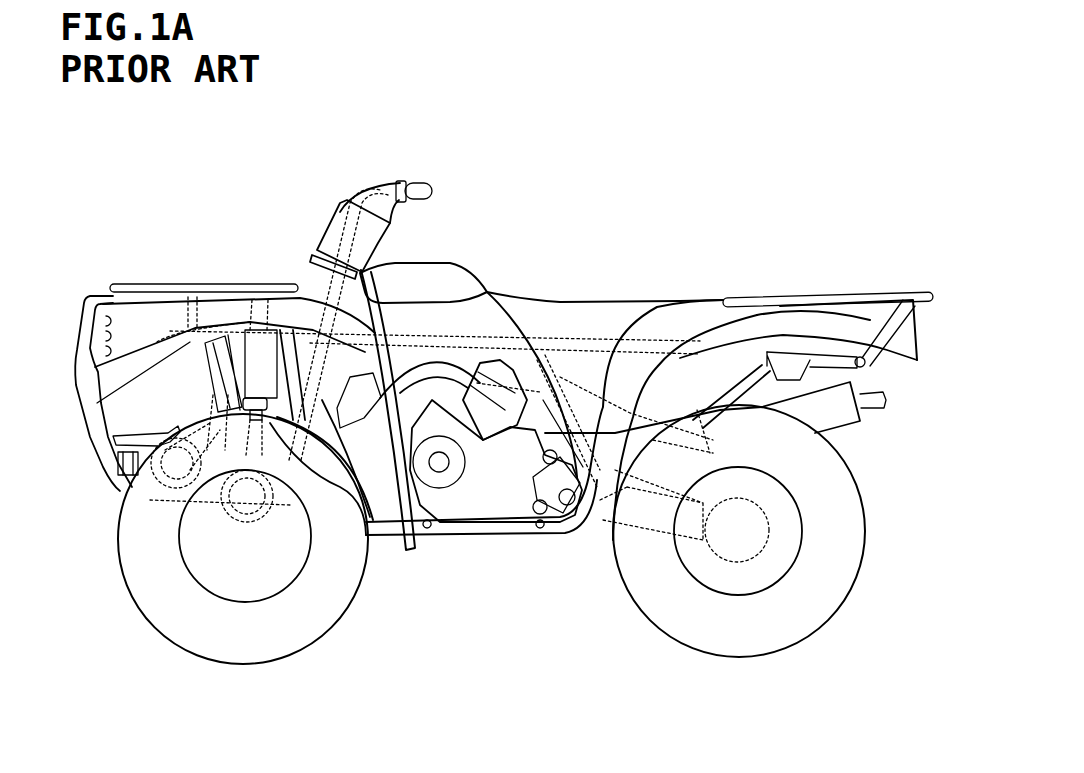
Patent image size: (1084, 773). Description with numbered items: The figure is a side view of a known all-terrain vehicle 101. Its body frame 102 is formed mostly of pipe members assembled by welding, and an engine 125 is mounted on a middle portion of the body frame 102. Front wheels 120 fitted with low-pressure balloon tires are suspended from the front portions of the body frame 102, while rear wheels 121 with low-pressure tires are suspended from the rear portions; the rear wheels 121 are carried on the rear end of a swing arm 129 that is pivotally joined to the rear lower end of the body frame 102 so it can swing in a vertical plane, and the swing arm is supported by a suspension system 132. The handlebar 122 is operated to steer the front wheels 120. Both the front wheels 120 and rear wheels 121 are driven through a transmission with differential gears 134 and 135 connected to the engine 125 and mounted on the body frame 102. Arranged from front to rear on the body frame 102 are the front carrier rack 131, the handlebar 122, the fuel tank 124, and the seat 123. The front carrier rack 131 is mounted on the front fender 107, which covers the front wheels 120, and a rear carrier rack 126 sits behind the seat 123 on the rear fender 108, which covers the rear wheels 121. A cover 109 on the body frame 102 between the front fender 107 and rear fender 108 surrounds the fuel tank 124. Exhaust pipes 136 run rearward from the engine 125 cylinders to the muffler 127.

The all-terrain vehicle 101 is at (100, 157).
The body frame 102 is at (427, 312).
The front fender 107 is at (133, 313).
The rear fender 108 is at (833, 322).
The cover 109 is at (450, 340).
The front wheels 120 is at (172, 612).
The rear wheels 121 is at (703, 630).
The handlebar 122 is at (341, 205).
The seat 123 is at (565, 320).
The fuel tank 124 is at (420, 277).
The engine 125 is at (463, 498).
The rear carrier rack 126 is at (808, 302).
The muffler 127 is at (820, 405).
The swing arm 129 is at (605, 510).
The front carrier rack 131 is at (189, 293).
The suspension system 132 is at (588, 387).
The front differential gear 134 is at (240, 494).
The rear differential gear 135 is at (738, 532).
The exhaust pipes 136 is at (455, 378).